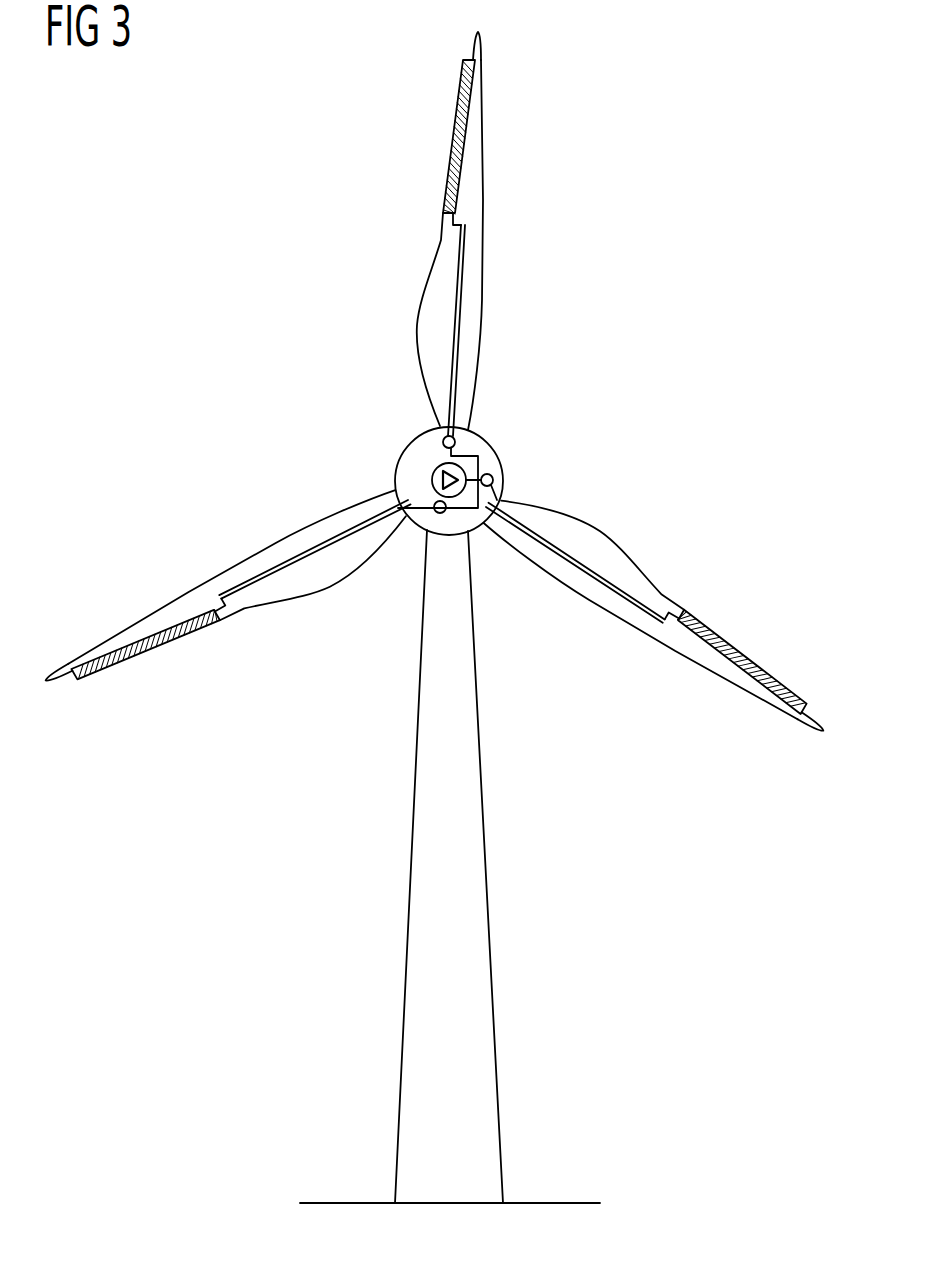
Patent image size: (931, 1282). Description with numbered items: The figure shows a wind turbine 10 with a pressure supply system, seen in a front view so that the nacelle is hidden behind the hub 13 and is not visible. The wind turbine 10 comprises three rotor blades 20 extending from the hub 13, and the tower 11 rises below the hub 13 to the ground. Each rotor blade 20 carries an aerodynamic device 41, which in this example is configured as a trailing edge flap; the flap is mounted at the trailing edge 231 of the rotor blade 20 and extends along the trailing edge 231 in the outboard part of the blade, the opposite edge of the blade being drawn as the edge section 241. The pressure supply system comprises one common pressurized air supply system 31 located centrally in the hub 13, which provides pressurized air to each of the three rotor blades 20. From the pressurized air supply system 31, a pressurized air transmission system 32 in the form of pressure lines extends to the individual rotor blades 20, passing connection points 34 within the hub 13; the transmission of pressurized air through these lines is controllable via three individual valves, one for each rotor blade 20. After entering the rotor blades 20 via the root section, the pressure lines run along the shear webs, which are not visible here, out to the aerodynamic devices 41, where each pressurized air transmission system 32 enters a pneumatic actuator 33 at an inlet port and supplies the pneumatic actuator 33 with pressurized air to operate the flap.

The wind turbine 10 is at (640, 418).
The tower 11 is at (490, 956).
The hub 13 is at (427, 441).
The rotor blade 20 is at (483, 209).
The pressurized air supply system 31 is at (433, 478).
The pressurized air transmission system 32 is at (456, 284).
The pneumatic actuator 33 is at (475, 78).
The connection point 34 is at (492, 476).
The aerodynamic device 41 is at (453, 143).
The trailing edge 231 is at (420, 330).
The blade edge section 241 is at (483, 311).